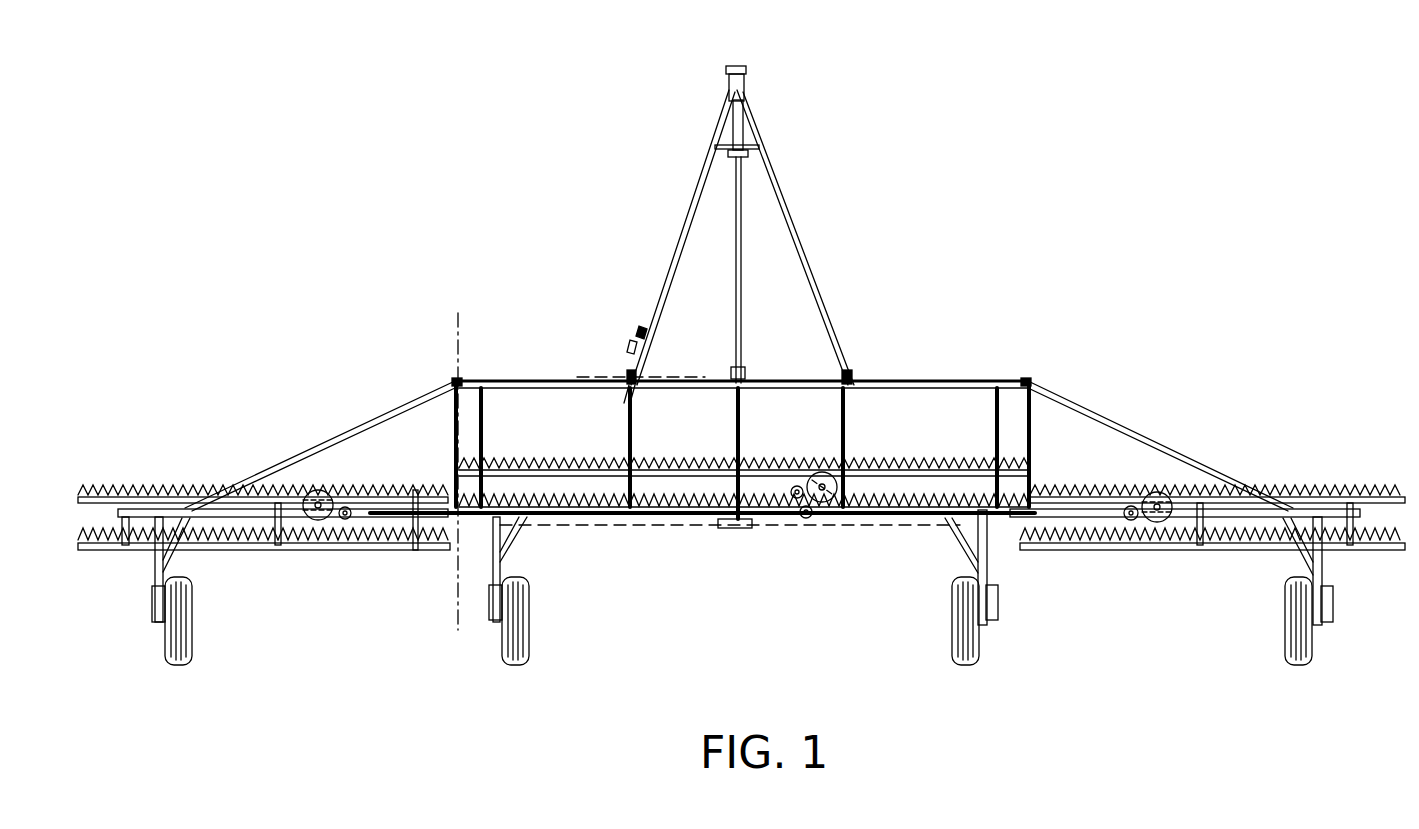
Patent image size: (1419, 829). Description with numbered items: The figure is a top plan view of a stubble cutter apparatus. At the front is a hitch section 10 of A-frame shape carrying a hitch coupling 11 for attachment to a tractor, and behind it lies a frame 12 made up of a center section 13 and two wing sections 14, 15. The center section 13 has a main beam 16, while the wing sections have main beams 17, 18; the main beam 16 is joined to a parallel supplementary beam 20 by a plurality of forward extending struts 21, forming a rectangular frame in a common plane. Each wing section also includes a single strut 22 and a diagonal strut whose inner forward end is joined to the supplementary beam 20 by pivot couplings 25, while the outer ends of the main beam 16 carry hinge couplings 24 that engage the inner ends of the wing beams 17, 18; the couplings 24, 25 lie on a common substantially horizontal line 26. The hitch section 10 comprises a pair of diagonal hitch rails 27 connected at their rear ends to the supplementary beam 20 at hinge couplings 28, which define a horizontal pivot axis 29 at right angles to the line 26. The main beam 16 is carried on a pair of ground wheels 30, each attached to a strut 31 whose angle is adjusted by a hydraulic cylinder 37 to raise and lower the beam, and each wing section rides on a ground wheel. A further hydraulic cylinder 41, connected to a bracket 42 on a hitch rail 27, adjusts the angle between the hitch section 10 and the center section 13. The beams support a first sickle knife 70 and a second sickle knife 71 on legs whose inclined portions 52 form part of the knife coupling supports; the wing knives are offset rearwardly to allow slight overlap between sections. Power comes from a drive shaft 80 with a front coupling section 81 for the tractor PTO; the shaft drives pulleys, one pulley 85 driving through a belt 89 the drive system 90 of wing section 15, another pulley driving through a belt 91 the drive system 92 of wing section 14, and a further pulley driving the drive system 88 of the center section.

The hitch section 10 is at (812, 198).
The hitch coupling 11 is at (747, 70).
The frame 12 is at (940, 342).
The center section 13 is at (868, 366).
The wing section 14 is at (1160, 380).
The wing section 15 is at (330, 406).
The main beam 16 is at (655, 517).
The main beam 17 is at (1232, 520).
The main beam 18 is at (258, 545).
The supplementary beam 20 is at (538, 383).
The forward extending struts 21 is at (490, 440).
The single strut 22 is at (450, 428).
The hinge couplings 24 is at (482, 522).
The pivot couplings 25 is at (455, 380).
The common line 26 is at (462, 330).
The diagonal hitch rails 27 is at (690, 213).
The hinge coupling 28 is at (629, 375).
The horizontal pivot axis 29 is at (683, 375).
The ground wheels 30 is at (531, 633).
The strut 31 is at (990, 608).
The hydraulic cylinder 37 is at (987, 572).
The hydraulic cylinder 41 is at (634, 350).
The bracket 42 is at (641, 328).
The inclined portion 52 is at (128, 548).
The first sickle knife 70 is at (886, 455).
The second sickle knife 71 is at (897, 494).
The drive shaft 80 is at (742, 235).
The front coupling section 81 is at (729, 88).
The pulley 85 is at (740, 530).
The drive system 88 is at (826, 516).
The belt 89 is at (648, 528).
The drive system 90 is at (323, 491).
The belt 91 is at (800, 528).
The drive system 92 is at (1153, 492).